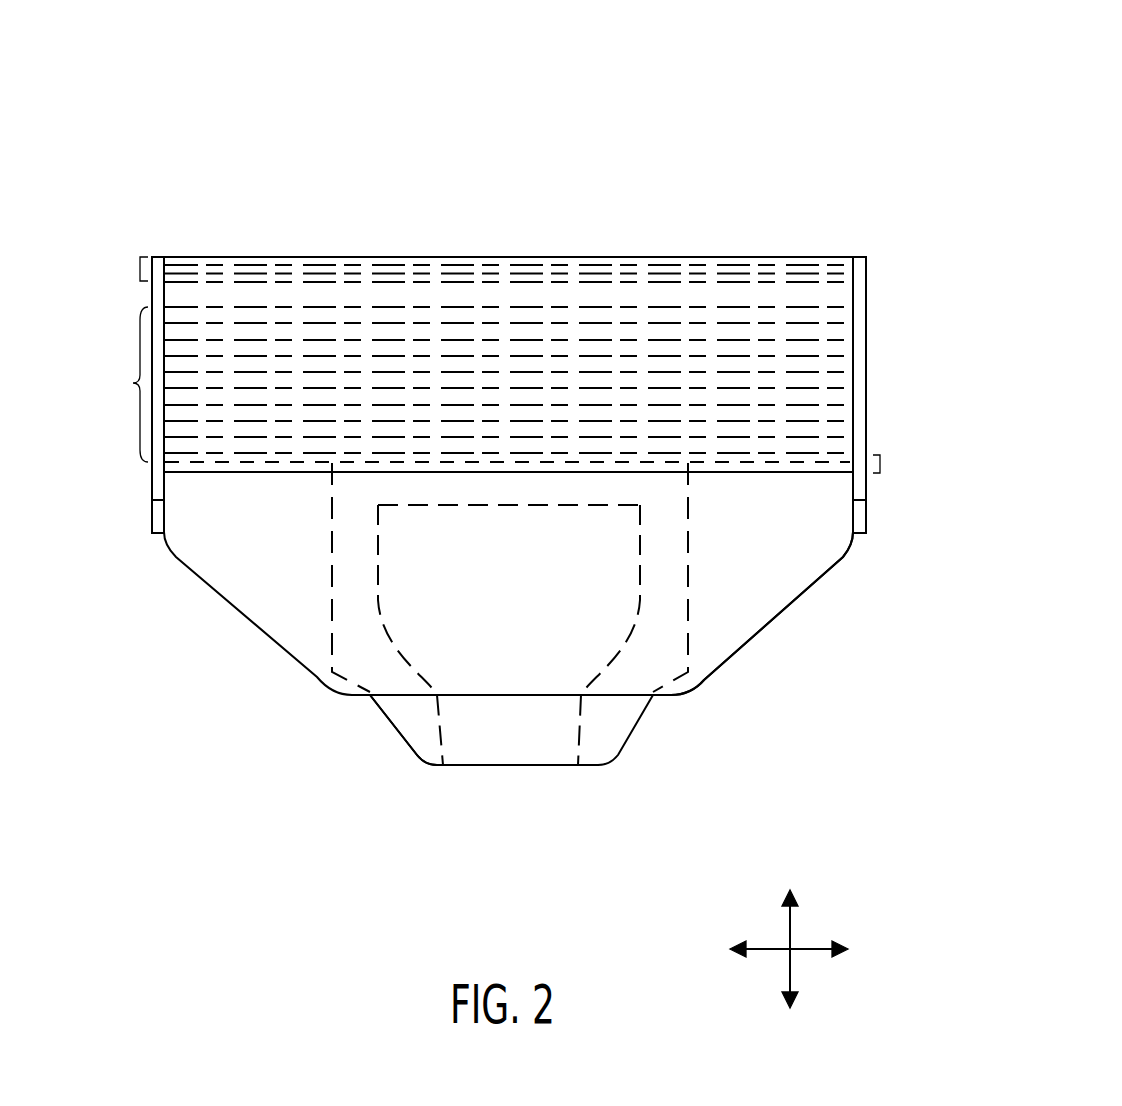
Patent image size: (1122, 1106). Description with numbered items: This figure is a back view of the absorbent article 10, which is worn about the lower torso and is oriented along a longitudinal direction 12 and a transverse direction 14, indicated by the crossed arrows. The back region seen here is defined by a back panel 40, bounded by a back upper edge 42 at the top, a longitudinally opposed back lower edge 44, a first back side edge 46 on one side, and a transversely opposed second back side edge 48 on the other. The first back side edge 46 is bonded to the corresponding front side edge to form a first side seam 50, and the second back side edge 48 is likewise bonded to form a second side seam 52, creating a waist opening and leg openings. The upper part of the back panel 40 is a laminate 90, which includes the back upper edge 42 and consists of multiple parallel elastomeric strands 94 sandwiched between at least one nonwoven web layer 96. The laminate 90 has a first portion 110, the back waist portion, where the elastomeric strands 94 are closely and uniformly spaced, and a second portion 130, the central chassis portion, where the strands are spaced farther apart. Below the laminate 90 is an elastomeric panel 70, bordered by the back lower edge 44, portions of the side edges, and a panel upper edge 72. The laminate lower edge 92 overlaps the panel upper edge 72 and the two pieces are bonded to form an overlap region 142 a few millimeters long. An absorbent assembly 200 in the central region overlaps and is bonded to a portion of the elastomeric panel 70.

The absorbent article 10 is at (708, 97).
The longitudinal direction 12 is at (790, 930).
The transverse direction 14 is at (817, 948).
The back panel 40 is at (208, 565).
The back upper edge 42 is at (390, 257).
The back lower edge 44 is at (515, 693).
The first back side edge 46 is at (866, 355).
The second back side edge 48 is at (150, 495).
The first side seam 50 is at (860, 515).
The second side seam 52 is at (158, 518).
The elastomeric panel 70 is at (747, 602).
The panel upper edge 72 is at (750, 470).
The laminate 90 is at (838, 292).
The laminate lower edge 92 is at (290, 472).
The elastomeric strands 94 is at (722, 305).
The nonwoven web layer 96 is at (177, 297).
The first portion 110 is at (140, 268).
The second portion 130 is at (118, 384).
The overlap region 142 is at (880, 464).
The absorbent assembly 200 is at (400, 742).